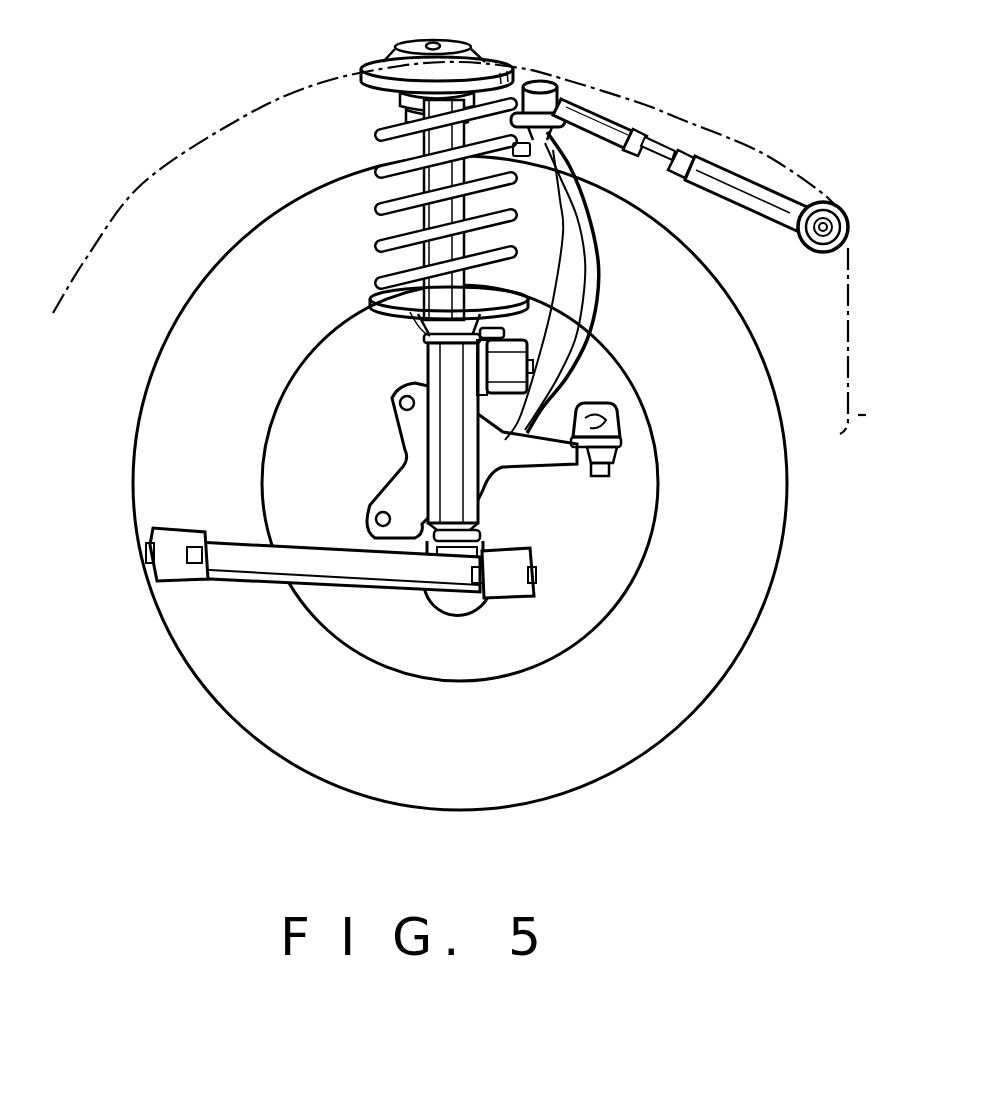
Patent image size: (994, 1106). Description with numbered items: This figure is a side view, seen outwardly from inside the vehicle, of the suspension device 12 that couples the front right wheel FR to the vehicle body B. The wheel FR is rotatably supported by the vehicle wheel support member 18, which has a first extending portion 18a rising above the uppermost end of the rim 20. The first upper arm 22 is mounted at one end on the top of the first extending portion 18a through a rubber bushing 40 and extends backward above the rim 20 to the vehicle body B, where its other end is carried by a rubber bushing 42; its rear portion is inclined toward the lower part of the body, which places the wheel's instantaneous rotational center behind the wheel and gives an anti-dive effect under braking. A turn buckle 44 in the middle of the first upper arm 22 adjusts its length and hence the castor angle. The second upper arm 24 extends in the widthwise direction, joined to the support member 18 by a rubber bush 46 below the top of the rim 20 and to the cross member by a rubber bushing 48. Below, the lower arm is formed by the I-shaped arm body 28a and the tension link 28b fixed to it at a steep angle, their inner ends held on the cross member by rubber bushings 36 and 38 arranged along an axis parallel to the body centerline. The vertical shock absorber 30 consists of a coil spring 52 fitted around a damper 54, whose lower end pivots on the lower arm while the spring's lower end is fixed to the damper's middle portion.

The suspension device 12 is at (599, 286).
The vehicle wheel support member 18 is at (564, 378).
The first extending portion 18a is at (620, 270).
The rim 20 is at (642, 405).
The first upper arm 22 is at (605, 122).
The second upper arm 24 is at (477, 347).
The arm body 28a is at (460, 585).
The tension link 28b is at (322, 577).
The shock absorber 30 is at (350, 139).
The rubber bushing 36 is at (510, 560).
The rubber bushing 38 is at (180, 537).
The rubber bushing 40 is at (548, 82).
The rubber bushing 42 is at (848, 226).
The turn buckle 44 is at (672, 156).
The rubber bush 46 is at (503, 316).
The rubber bushing 48 is at (510, 357).
The coil spring 52 is at (393, 312).
The damper 54 is at (398, 217).
The vehicle body B is at (830, 168).
The front right wheel FR is at (768, 348).